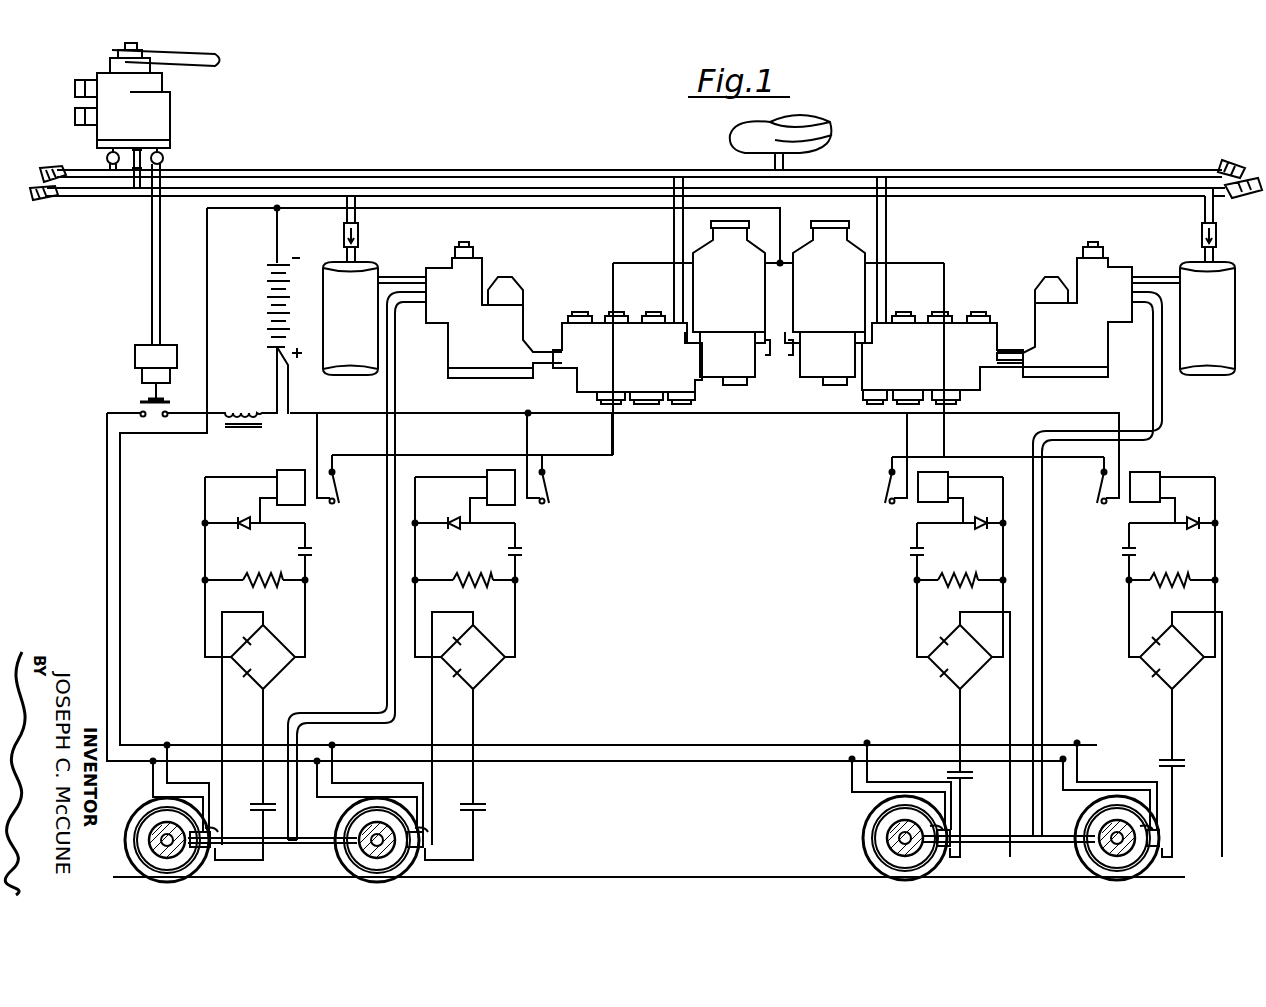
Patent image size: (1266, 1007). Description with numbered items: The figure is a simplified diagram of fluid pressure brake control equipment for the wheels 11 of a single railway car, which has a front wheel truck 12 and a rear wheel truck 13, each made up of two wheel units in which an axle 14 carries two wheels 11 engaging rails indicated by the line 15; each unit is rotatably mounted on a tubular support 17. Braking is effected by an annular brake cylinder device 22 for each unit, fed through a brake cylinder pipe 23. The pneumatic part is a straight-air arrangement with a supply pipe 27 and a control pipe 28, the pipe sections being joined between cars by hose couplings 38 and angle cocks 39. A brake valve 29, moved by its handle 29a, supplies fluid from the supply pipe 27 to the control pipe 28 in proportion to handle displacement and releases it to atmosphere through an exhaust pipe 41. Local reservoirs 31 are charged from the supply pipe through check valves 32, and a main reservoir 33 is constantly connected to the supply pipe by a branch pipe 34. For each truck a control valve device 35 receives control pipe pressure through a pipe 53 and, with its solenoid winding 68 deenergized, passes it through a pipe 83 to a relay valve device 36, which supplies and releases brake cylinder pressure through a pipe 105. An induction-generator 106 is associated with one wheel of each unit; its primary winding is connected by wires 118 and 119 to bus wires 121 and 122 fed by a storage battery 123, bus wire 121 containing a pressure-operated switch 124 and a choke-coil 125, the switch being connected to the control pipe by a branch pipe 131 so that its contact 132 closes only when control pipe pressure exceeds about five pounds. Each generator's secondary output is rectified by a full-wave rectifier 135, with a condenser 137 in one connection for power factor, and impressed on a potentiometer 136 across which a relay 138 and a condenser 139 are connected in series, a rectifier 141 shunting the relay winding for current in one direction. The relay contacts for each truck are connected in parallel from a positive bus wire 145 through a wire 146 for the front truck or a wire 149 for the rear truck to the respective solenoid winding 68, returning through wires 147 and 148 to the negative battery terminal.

The wheels 11 is at (128, 857).
The front wheel truck 12 is at (302, 865).
The rear wheel truck 13 is at (1040, 865).
The axle 14 is at (175, 853).
The track 15 is at (700, 876).
The tubular support 17 is at (158, 855).
The annular brake cylinder device 22 is at (165, 820).
The brake cylinder pipe 23 is at (328, 830).
The supply pipe 27 is at (398, 190).
The control pipe 28 is at (462, 163).
The brake valve 29 is at (178, 118).
The brake valve handle 29a is at (222, 60).
The local reservoirs 31 is at (330, 370).
The check valves 32 is at (360, 232).
The main reservoir 33 is at (841, 135).
The branch pipe 34 is at (775, 160).
The control valve device 35 is at (598, 317).
The relay valve device 36 is at (490, 256).
The hose couplings 38 is at (30, 190).
The angle cocks 39 is at (64, 168).
The exhaust pipe 41 is at (136, 165).
The pipe 53 is at (674, 226).
The solenoid winding 68 is at (807, 292).
The pipe 83 is at (547, 352).
The pipe 105 is at (387, 606).
The induction-generator 106 is at (212, 836).
The wire 118 is at (153, 772).
The wire 119 is at (167, 772).
The bus wire 121 is at (107, 525).
The bus wire 122 is at (120, 572).
The storage battery 123 is at (262, 300).
The pressure-operated switch 124 is at (127, 358).
The choke-coil 125 is at (258, 398).
The branch pipe 131 is at (152, 262).
The contact 132 is at (140, 400).
The full-wave rectifier 135 is at (282, 664).
The potentiometer 136 is at (262, 578).
The condenser 137 is at (262, 802).
The relay 138 is at (293, 463).
The condenser 139 is at (310, 546).
The rectifier 141 is at (244, 517).
The bus wire 145 is at (442, 414).
The wire 146 is at (613, 455).
The wire 147 is at (775, 262).
The wire 148 is at (780, 212).
The wire 149 is at (944, 290).